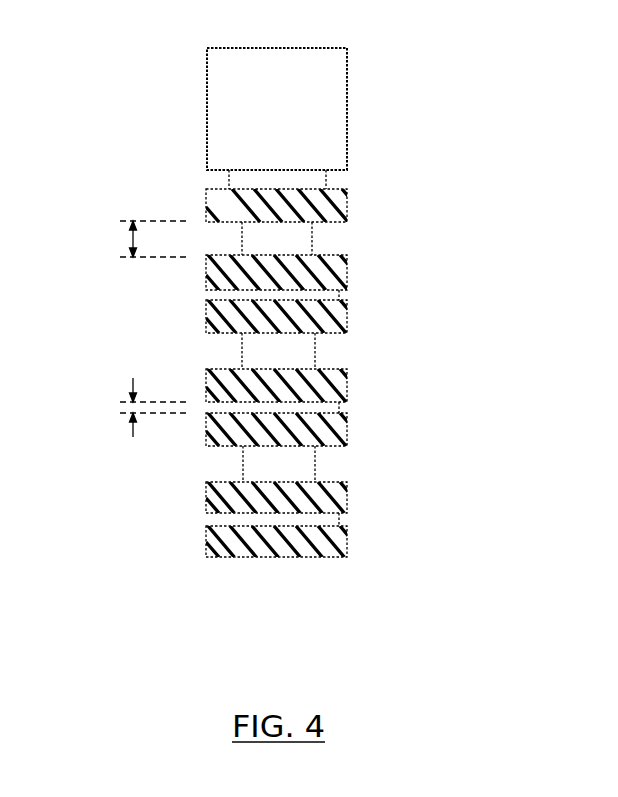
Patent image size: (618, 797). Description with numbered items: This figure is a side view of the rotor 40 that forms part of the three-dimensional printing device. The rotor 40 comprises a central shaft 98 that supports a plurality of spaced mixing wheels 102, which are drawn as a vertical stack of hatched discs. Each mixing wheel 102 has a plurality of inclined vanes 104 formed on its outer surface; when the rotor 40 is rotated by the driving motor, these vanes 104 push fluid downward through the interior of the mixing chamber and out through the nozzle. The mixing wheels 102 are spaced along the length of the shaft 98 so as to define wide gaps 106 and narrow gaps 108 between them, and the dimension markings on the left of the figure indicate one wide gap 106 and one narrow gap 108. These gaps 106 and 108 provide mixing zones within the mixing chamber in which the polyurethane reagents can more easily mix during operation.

The rotor 40 is at (512, 54).
The central shaft 98 is at (300, 465).
The mixing wheel 102 is at (331, 373).
The inclined vanes 104 is at (262, 372).
The wide gaps 106 is at (130, 240).
The narrow gaps 108 is at (134, 414).